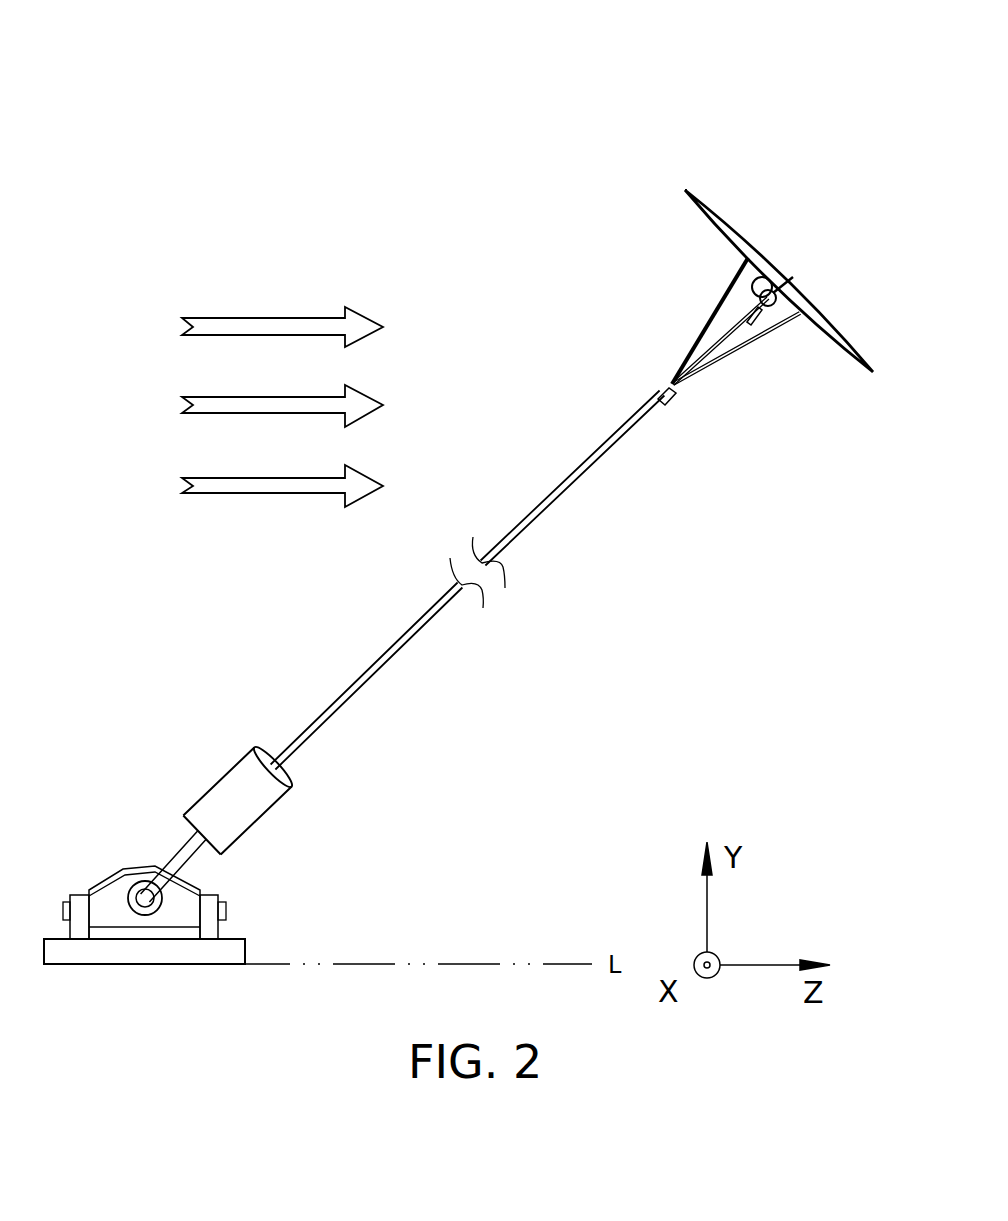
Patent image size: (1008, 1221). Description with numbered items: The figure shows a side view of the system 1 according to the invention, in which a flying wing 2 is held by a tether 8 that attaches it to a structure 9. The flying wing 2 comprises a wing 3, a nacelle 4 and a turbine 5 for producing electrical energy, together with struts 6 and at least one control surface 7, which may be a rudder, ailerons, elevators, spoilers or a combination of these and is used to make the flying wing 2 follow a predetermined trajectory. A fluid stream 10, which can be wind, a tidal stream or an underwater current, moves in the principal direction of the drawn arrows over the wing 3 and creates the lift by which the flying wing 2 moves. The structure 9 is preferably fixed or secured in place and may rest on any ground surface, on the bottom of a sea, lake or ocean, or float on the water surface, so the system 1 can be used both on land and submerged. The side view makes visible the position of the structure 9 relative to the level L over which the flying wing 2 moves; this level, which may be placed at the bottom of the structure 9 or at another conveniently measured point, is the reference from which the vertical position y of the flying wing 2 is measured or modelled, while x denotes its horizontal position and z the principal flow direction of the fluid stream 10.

The system 1 is at (332, 84).
The flying wing 2 is at (813, 253).
The wing 3 is at (740, 236).
The nacelle 4 is at (760, 290).
The turbine 5 is at (736, 331).
The struts 6 is at (692, 311).
The control surface 7 is at (755, 318).
The tether 8 is at (575, 482).
The structure 9 is at (112, 853).
The fluid stream 10 is at (237, 312).